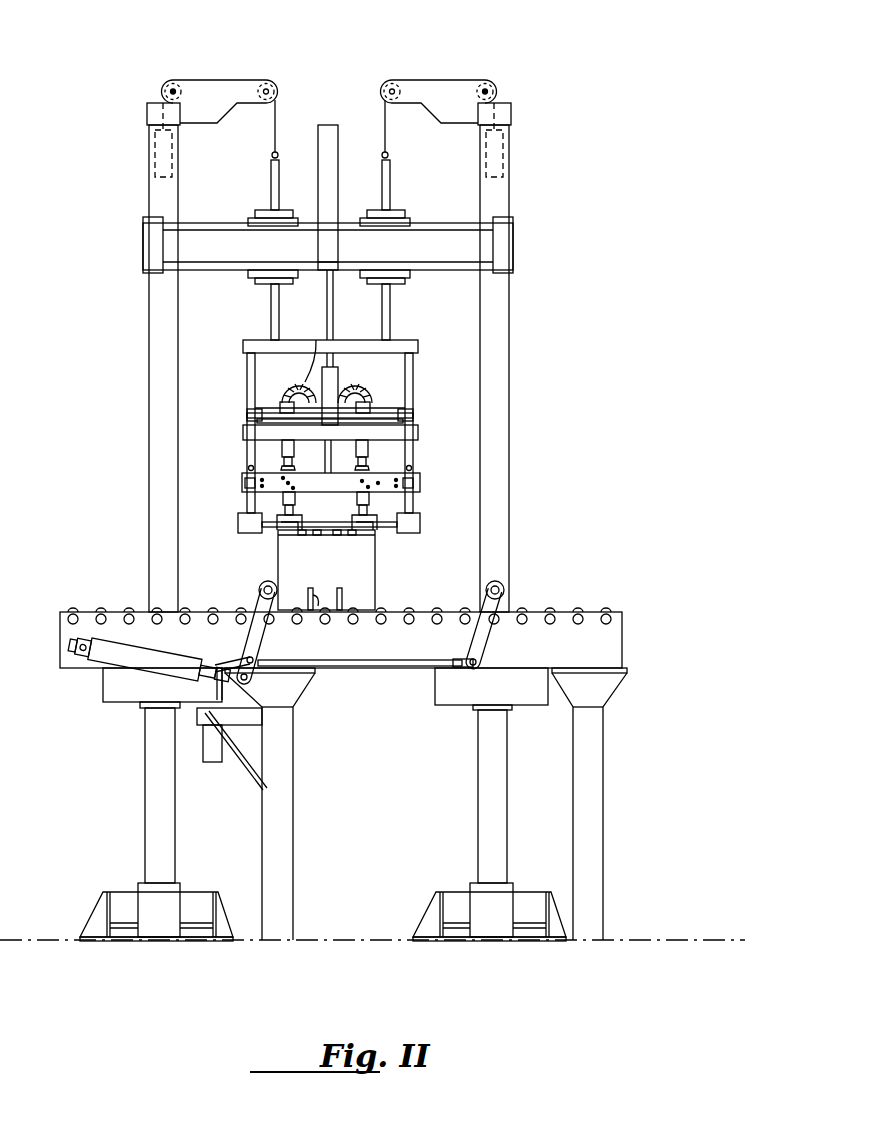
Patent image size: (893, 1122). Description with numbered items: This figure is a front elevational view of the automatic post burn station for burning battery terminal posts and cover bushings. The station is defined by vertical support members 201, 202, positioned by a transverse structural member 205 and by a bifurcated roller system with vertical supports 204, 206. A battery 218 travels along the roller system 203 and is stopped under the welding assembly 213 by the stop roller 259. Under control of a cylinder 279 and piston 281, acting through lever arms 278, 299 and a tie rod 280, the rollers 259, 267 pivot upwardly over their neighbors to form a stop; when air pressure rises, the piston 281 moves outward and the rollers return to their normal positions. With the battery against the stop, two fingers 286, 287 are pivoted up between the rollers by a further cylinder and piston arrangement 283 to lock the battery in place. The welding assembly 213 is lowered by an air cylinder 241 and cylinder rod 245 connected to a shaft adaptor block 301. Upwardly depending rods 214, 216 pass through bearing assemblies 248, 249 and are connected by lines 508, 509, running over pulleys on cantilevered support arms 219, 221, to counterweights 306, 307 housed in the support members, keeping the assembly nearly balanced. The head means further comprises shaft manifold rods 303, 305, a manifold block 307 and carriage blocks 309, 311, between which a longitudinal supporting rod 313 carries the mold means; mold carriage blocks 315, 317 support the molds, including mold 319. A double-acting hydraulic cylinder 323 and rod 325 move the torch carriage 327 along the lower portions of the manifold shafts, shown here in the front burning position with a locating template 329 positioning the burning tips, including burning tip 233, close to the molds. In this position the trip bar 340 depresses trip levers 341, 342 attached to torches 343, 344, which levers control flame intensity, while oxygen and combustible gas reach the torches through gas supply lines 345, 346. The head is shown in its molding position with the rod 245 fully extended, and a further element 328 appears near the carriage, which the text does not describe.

The vertical support member 201 is at (510, 365).
The vertical support member 202 is at (148, 368).
The roller system 203 is at (606, 648).
The vertical support 204 is at (293, 845).
The transverse structural member 205 is at (240, 259).
The vertical support 206 is at (603, 825).
The welding assembly 213 is at (428, 410).
The rod 214 is at (272, 312).
The rod 216 is at (390, 322).
The battery 218 is at (345, 569).
The cantilevered support arm 219 is at (201, 93).
The cantilevered support arm 221 is at (447, 92).
The burning tip 233 is at (370, 506).
The air cylinder 241 is at (326, 135).
The cylinder rod 245 is at (334, 301).
The bearing assembly 248 is at (258, 281).
The bearing assembly 249 is at (405, 282).
The stop roller 259 is at (259, 588).
The roller 267 is at (502, 585).
The lever arm 278 is at (236, 674).
The cylinder 279 is at (127, 658).
The tie rod 280 is at (392, 668).
The piston 281 is at (230, 677).
The cylinder and piston arrangement 283 is at (210, 758).
The finger 286 is at (343, 597).
The finger 287 is at (318, 610).
The lever arm 299 is at (486, 640).
The shaft adaptor block 301 is at (243, 347).
The shaft manifold rod 303 is at (250, 383).
The shaft manifold rod 305 is at (413, 370).
The counterweight 306 is at (160, 157).
The counterweight 307 is at (508, 160).
The carriage block 309 is at (250, 532).
The carriage block 311 is at (420, 523).
The longitudinal supporting rod 313 is at (397, 530).
The mold carriage block 315 is at (280, 532).
The mold carriage block 317 is at (377, 533).
The mold 319 is at (277, 520).
The hydraulic cylinder 323 is at (333, 367).
The rod 325 is at (295, 447).
The torch carriage 327 is at (432, 478).
The left lower cylinder 328 is at (283, 503).
The locating template 329 is at (243, 484).
The trip bar 340 is at (415, 425).
The trip lever 341 is at (282, 445).
The trip lever 342 is at (368, 450).
The torch 343 is at (281, 407).
The torch 344 is at (372, 419).
The gas supply line 345 is at (301, 349).
The gas supply line 346 is at (369, 408).
The line 508 is at (277, 112).
The line 509 is at (385, 115).